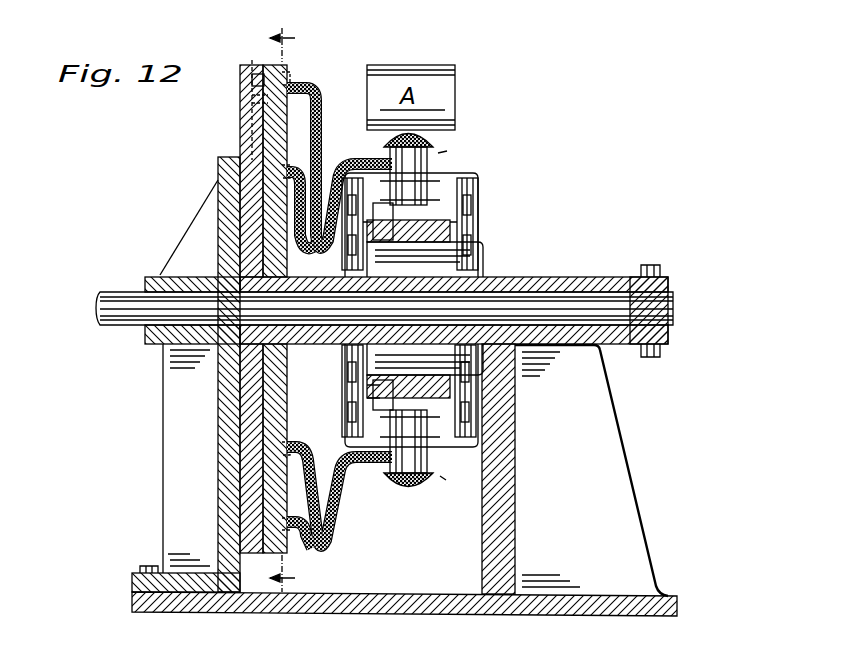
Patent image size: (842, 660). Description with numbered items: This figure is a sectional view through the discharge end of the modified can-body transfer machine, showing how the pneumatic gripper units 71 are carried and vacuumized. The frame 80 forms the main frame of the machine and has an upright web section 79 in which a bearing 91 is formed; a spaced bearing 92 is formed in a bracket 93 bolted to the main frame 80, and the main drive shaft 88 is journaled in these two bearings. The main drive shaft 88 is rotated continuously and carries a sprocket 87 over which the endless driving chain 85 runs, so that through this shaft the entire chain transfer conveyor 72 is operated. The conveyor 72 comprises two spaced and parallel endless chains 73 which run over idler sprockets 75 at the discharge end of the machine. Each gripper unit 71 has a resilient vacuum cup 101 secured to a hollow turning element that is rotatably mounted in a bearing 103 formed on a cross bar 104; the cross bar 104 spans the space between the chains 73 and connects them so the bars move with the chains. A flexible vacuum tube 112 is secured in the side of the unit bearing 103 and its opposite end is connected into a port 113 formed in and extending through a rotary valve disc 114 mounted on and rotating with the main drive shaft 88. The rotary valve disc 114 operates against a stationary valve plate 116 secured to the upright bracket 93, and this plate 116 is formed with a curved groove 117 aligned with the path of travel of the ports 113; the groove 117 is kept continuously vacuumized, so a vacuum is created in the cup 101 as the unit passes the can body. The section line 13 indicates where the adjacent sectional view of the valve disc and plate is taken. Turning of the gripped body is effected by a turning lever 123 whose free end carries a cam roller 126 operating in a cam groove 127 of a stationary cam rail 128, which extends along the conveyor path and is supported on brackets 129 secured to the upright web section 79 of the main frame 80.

The section line 13— 13 is at (298, 311).
The pneumatic gripper unit 71 is at (445, 158).
The chain transfer conveyor 72 is at (480, 187).
The endless chains 73 is at (344, 436).
The idler sprockets 75 is at (480, 226).
The upright web section 79 is at (484, 546).
The frame 80 is at (498, 600).
The endless driving chain 85 is at (662, 270).
The sprocket 87 is at (670, 290).
The main drive shaft 88 is at (676, 313).
The bearing 91 is at (592, 284).
The bearing 92 is at (152, 283).
The bracket 93 is at (226, 418).
The vacuum cup 101 is at (436, 140).
The bearing 103 is at (430, 160).
The cross bar 104 is at (485, 178).
The flexible vacuum tube 112 is at (310, 128).
The port 113 is at (290, 70).
The rotary valve disc 114 is at (272, 108).
The stationary valve plate 116 is at (248, 140).
The curved groove 117 is at (258, 100).
The turning lever 123 is at (455, 214).
The cam roller 126 is at (380, 402).
The cam groove 127 is at (372, 392).
The stationary cam rail 128 is at (452, 238).
The brackets 129 is at (480, 268).